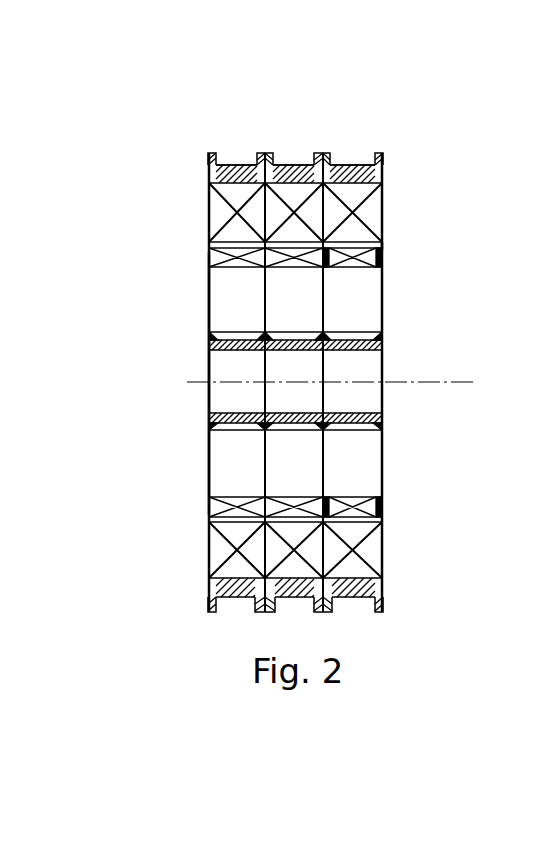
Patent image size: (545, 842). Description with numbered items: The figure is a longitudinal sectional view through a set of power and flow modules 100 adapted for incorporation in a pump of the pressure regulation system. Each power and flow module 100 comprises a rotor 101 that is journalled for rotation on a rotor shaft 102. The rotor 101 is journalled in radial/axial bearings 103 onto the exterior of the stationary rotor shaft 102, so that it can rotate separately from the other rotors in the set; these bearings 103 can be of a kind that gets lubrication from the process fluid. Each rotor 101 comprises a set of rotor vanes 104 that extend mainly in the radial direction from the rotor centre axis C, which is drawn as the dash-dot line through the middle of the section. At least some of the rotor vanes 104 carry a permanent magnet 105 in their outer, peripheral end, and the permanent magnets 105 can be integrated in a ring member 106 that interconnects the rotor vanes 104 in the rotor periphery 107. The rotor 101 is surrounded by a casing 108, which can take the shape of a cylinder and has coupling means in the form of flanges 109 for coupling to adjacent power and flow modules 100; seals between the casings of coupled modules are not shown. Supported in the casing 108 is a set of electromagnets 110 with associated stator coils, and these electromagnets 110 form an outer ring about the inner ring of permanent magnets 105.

The power and flow module 100 is at (237, 161).
The rotor 101 is at (200, 252).
The rotor shaft 102 is at (373, 367).
The radial/axial bearings 103 is at (384, 337).
The rotor vanes 104 is at (365, 296).
The permanent magnet 105 is at (352, 268).
The ring member 106 is at (390, 253).
The rotor periphery 107 is at (389, 247).
The casing 108 is at (377, 180).
The flanges 109 is at (381, 153).
The electromagnets 110 is at (375, 210).
The rotor centre axis C is at (457, 378).